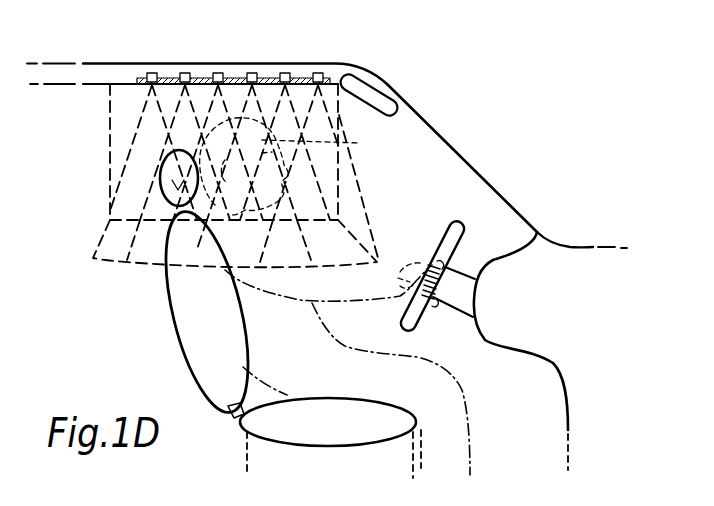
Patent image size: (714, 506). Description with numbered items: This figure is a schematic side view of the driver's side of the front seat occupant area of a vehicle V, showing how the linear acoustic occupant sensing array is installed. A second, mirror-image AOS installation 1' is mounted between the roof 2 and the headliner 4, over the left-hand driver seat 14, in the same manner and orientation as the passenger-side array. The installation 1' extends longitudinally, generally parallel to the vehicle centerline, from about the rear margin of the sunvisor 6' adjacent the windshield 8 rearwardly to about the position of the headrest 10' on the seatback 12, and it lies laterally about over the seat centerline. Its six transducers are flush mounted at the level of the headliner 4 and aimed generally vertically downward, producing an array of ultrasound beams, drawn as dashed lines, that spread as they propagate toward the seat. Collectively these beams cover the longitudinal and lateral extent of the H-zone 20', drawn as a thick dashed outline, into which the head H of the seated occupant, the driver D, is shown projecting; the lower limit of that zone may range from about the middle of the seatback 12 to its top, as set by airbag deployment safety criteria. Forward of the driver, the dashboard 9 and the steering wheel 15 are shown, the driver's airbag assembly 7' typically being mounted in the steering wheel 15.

The mirror-image AOS installation 1' is at (209, 54).
The roof 2 is at (147, 63).
The headliner 4 is at (102, 87).
The grab handle / visor 6' is at (388, 89).
The windshield 8 is at (476, 174).
The vehicle V is at (452, 134).
The head H is at (250, 141).
The curtain airbag 20' is at (220, 175).
The side airbag 10' is at (160, 178).
The seatback 12 is at (222, 342).
The seat 14 is at (339, 429).
The dashboard D is at (293, 342).
The dashboard 9 is at (544, 313).
The steering wheel 15 is at (466, 230).
The driver's airbag assembly 7' is at (425, 305).